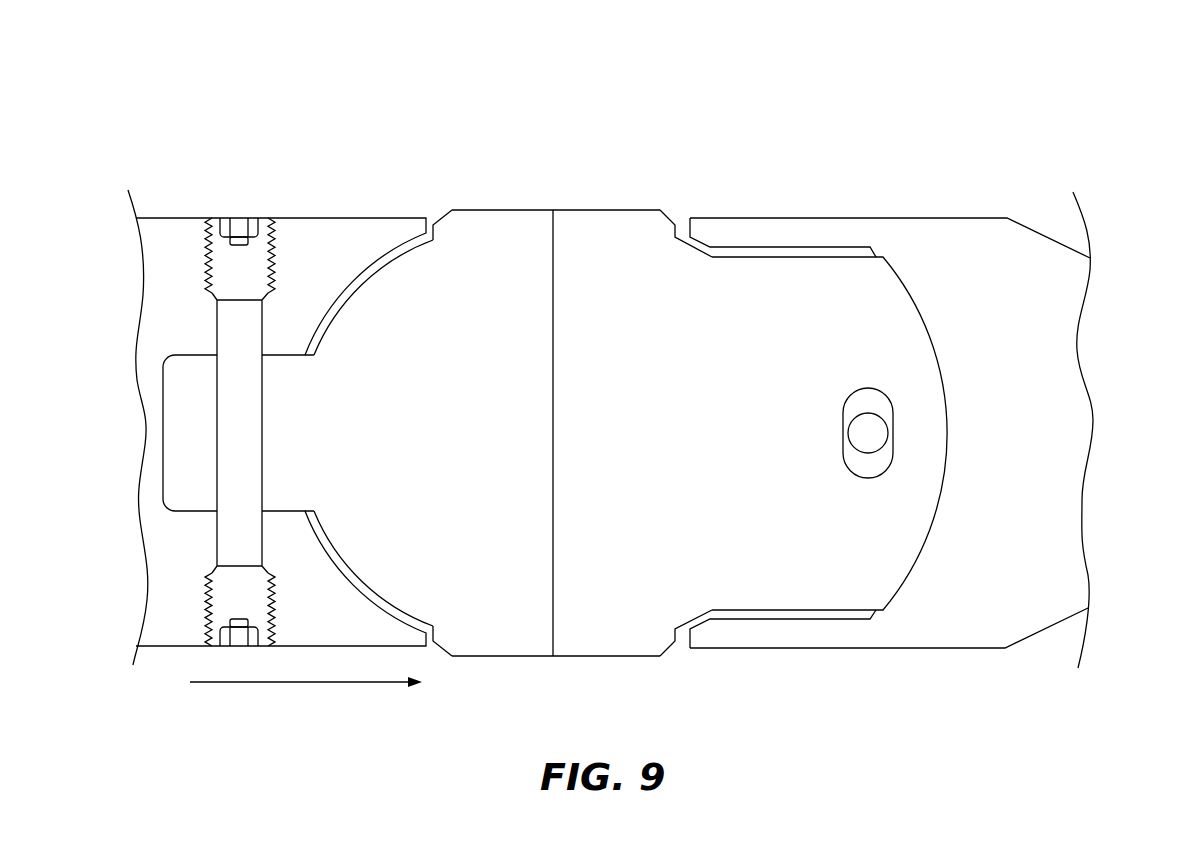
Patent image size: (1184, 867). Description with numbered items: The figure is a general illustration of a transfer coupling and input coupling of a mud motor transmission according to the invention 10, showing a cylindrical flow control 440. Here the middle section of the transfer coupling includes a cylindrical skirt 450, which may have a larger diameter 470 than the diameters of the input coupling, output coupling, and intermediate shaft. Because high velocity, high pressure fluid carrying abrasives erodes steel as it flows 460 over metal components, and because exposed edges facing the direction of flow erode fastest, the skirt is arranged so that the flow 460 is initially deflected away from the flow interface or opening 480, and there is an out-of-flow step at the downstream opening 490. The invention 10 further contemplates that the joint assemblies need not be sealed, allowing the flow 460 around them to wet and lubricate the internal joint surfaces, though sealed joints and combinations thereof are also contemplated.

The invention 10 is at (1128, 79).
The cylindrical flow control 440 is at (1082, 147).
The cylindrical skirt 450 is at (510, 210).
The flow 460 is at (432, 682).
The diameter 470 is at (553, 418).
The flow interface or opening 480 is at (441, 211).
The opening 490 is at (670, 218).